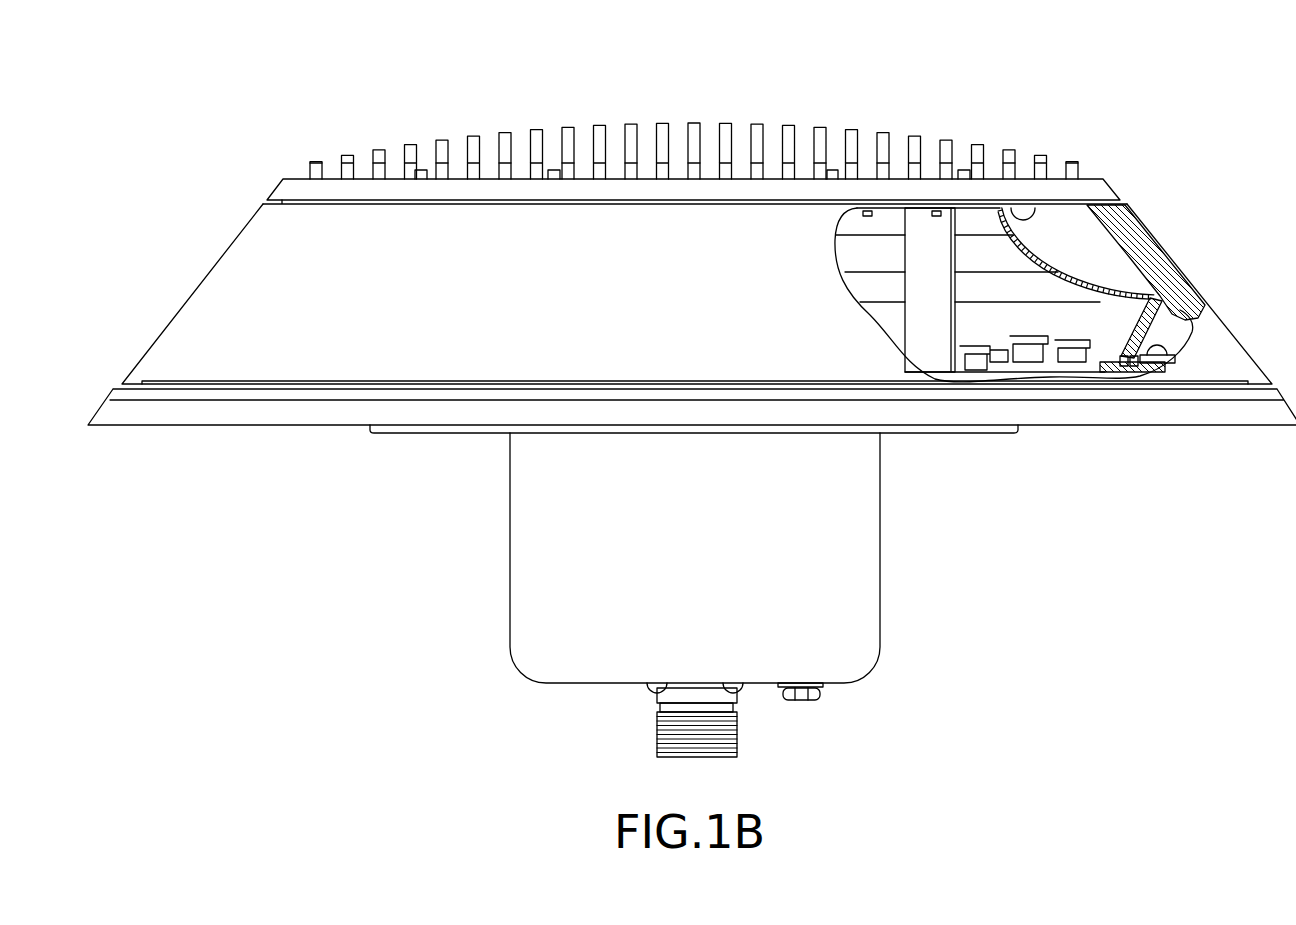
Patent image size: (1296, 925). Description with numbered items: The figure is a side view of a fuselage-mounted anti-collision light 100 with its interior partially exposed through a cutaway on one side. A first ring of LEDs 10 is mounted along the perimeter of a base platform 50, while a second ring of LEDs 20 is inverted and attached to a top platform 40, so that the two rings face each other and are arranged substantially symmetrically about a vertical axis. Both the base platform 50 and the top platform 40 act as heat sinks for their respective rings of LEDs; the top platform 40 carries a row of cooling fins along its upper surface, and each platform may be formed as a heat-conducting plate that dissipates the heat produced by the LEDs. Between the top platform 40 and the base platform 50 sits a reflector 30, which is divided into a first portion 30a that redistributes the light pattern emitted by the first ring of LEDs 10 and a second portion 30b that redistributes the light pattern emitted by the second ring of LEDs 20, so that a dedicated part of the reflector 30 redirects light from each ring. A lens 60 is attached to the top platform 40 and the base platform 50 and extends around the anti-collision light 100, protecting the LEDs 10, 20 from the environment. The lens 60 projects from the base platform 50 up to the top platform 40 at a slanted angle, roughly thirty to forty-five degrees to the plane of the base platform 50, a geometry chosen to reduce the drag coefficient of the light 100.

The anti-collision light 100 is at (1102, 98).
The first ring of LEDs 10 is at (1172, 328).
The second ring of LEDs 20 is at (1033, 212).
The reflector 30 is at (1097, 356).
The first portion of reflector 30a is at (1122, 342).
The second portion of reflector 30b is at (1068, 277).
The top platform 40 is at (717, 119).
The base platform 50 is at (280, 426).
The lens 60 is at (203, 280).